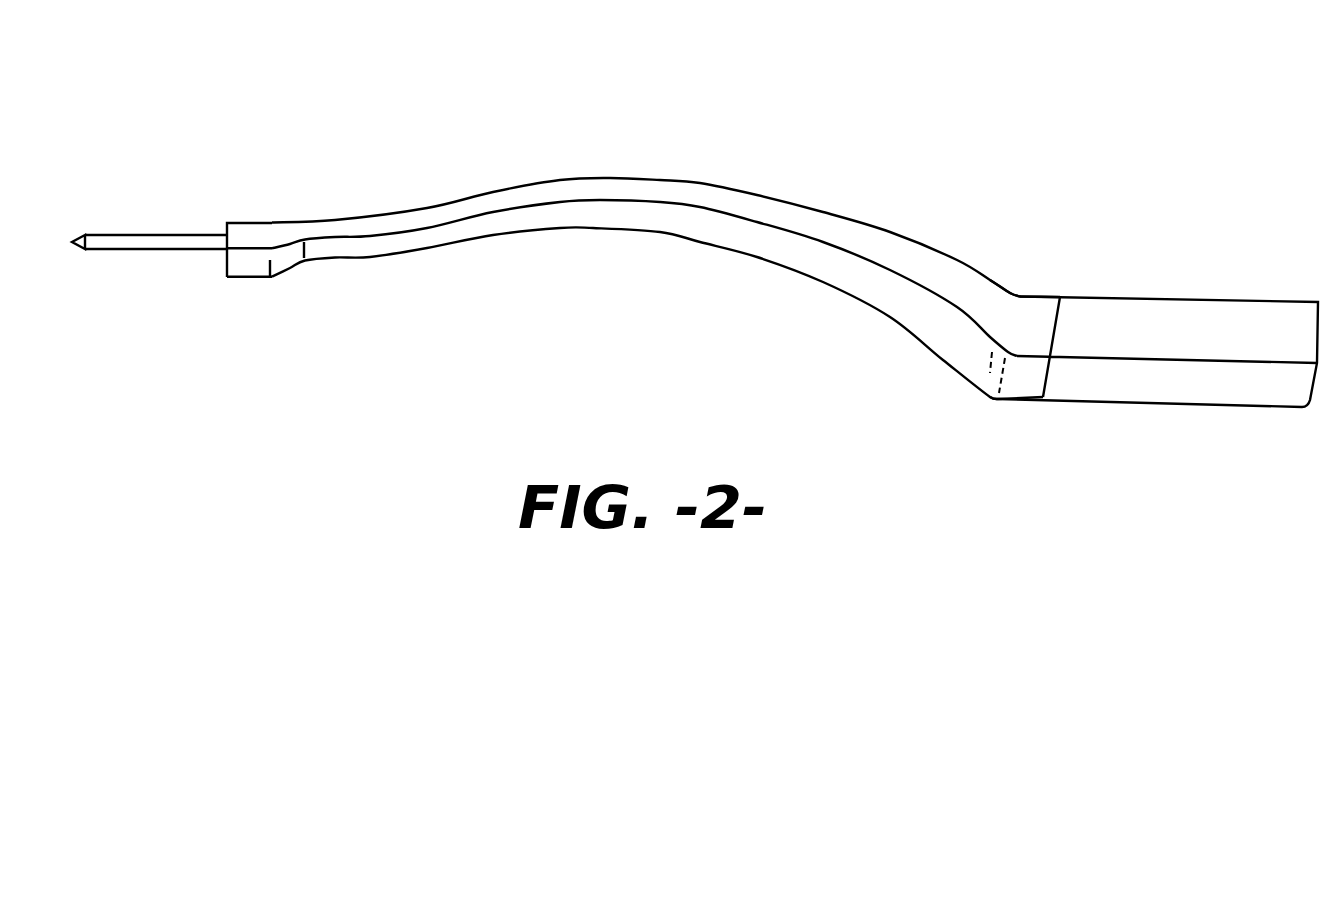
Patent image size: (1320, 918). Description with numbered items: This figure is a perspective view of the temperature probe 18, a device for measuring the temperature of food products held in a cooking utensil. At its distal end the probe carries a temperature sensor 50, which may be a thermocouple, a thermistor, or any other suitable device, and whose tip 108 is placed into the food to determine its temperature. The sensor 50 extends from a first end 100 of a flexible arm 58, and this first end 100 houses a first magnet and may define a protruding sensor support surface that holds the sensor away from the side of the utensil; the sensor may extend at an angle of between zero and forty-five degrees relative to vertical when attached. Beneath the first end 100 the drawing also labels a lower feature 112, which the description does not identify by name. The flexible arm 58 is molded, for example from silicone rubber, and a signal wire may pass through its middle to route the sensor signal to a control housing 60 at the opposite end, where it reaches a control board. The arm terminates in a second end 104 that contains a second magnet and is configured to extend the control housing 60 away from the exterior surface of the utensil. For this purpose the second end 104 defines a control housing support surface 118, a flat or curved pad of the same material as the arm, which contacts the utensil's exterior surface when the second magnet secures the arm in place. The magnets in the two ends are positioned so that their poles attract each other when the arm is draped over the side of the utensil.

The temperature probe 18 is at (691, 258).
The temperature sensor 50 is at (153, 240).
The flexible arm 58 is at (628, 217).
The control housing 60 is at (1192, 385).
The first end 100 is at (260, 205).
The second end 104 is at (1024, 280).
The tip 108 is at (70, 234).
The hub lower flat 112 is at (249, 283).
The control housing support surface 118 is at (981, 405).